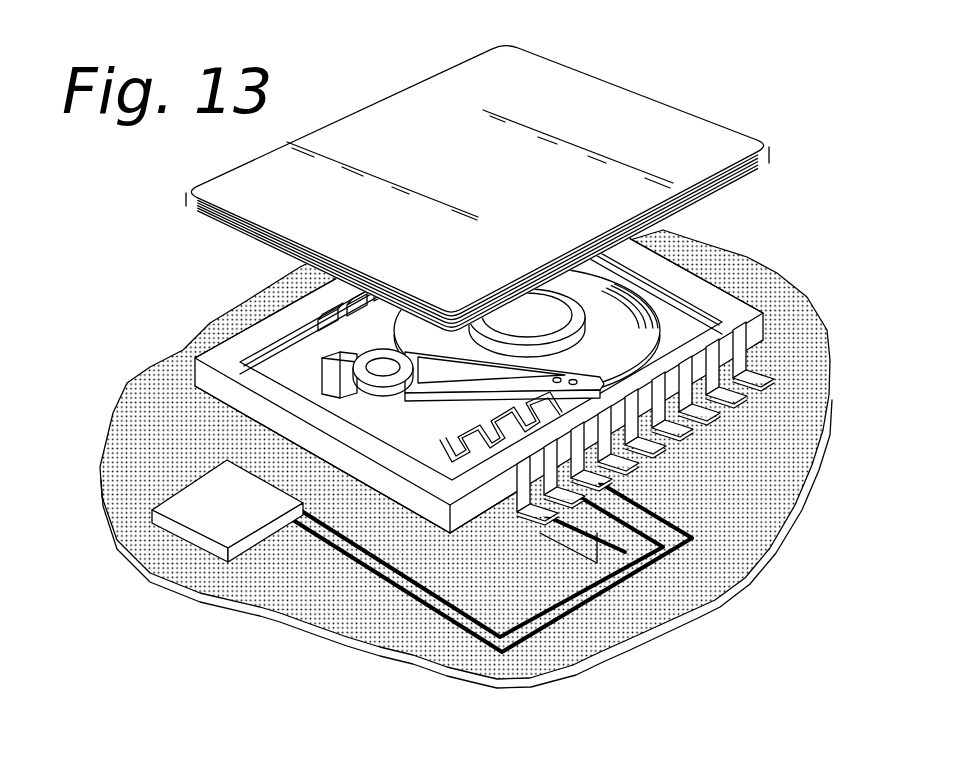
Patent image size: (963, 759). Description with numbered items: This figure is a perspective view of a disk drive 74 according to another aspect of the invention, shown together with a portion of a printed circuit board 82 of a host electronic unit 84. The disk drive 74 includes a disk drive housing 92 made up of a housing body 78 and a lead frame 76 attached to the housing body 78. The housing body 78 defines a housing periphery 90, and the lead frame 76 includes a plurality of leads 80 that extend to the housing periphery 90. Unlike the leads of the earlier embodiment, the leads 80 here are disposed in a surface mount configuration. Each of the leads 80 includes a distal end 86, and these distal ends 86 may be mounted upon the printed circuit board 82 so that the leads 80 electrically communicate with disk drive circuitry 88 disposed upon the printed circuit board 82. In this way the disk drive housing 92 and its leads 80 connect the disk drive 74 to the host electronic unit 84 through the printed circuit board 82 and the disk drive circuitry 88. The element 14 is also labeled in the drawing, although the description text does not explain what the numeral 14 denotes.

The conductive traces 14 is at (567, 457).
The disk drive 74 is at (303, 307).
The lead frame 76 is at (237, 400).
The housing body 78 is at (400, 436).
The leads 80 is at (732, 360).
The printed circuit board 82 is at (237, 305).
The host electronic unit 84 is at (372, 62).
The distal ends 86 is at (740, 397).
The disk drive circuitry 88 is at (237, 513).
The housing periphery 90 is at (767, 320).
The disk drive housing 92 is at (222, 358).